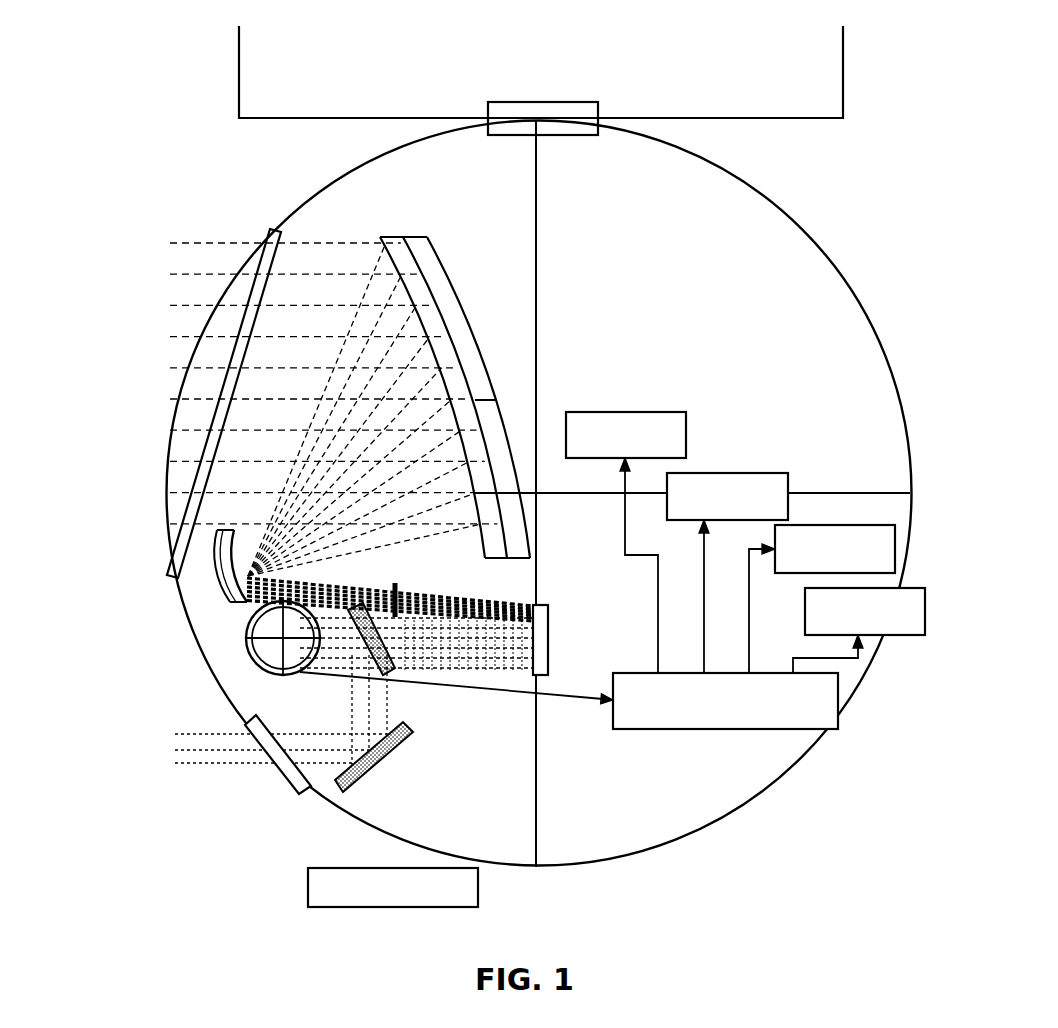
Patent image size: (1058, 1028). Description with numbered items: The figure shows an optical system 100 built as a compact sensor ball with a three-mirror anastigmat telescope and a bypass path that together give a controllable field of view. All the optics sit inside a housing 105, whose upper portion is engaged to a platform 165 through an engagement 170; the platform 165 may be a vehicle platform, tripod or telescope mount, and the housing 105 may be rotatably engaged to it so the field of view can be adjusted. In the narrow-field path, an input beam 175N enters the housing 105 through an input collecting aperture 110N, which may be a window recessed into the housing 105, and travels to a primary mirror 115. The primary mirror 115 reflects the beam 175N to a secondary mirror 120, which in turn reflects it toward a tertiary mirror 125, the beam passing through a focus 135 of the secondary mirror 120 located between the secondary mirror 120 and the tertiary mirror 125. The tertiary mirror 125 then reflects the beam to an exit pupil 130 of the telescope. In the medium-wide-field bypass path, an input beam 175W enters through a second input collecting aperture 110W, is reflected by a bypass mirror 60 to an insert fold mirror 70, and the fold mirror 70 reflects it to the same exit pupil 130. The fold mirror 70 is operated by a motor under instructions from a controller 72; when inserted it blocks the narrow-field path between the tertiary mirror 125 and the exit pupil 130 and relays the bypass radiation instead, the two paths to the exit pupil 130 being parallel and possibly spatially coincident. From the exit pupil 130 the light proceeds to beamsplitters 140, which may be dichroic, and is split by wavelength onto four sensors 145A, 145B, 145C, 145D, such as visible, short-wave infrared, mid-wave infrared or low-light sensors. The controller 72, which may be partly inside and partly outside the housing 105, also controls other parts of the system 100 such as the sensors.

The optical system 100 is at (248, 171).
The housing 105 is at (787, 215).
The input collecting aperture 110N is at (262, 256).
The input collecting aperture 110W is at (290, 782).
The primary mirror 115 is at (430, 250).
The secondary mirror 120 is at (247, 600).
The tertiary mirror 125 is at (550, 608).
The exit pupil 130 is at (263, 668).
The focus 135 is at (398, 592).
The beamsplitters 140 is at (729, 731).
The sensor 145A is at (628, 412).
The sensor 145B is at (728, 473).
The sensor 145C is at (833, 525).
The sensor 145D is at (897, 635).
The platform 165 is at (843, 42).
The engagement 170 is at (543, 102).
The input beam 175N is at (150, 243).
The input beam 175W is at (172, 727).
The bypass mirror 60 is at (400, 742).
The insert fold mirror 70 is at (388, 672).
The controller 72 is at (308, 884).